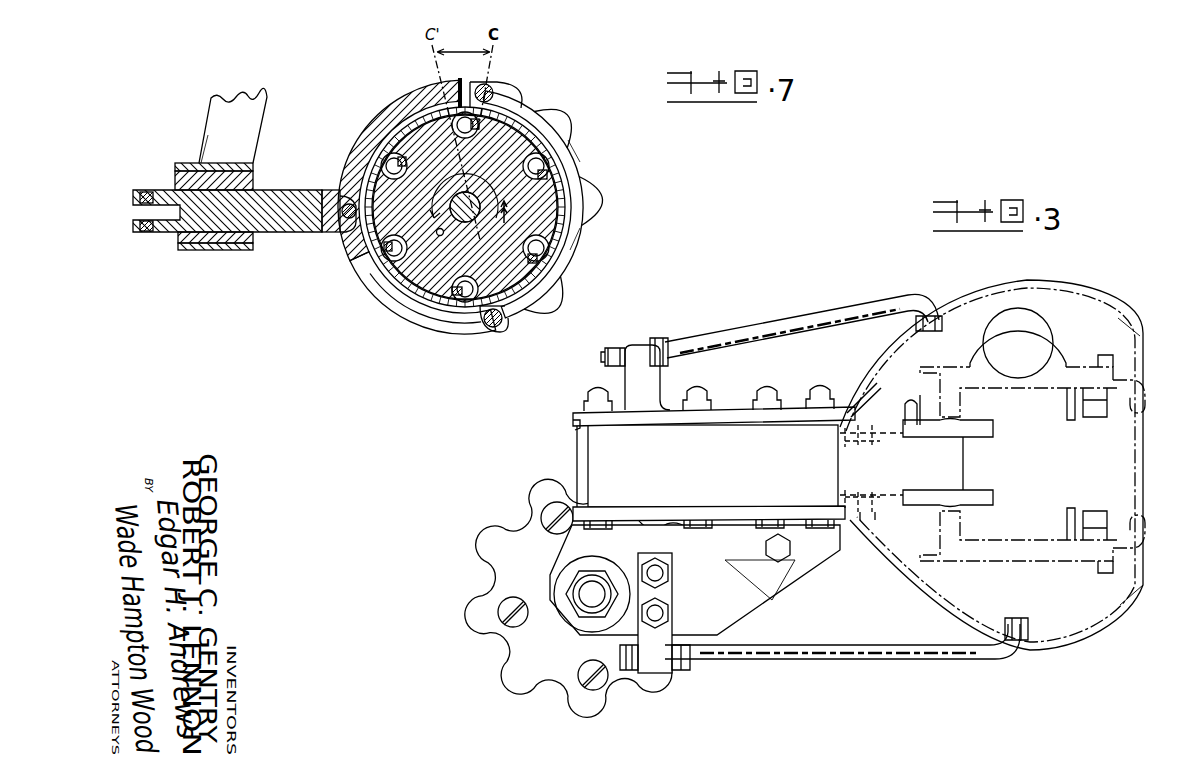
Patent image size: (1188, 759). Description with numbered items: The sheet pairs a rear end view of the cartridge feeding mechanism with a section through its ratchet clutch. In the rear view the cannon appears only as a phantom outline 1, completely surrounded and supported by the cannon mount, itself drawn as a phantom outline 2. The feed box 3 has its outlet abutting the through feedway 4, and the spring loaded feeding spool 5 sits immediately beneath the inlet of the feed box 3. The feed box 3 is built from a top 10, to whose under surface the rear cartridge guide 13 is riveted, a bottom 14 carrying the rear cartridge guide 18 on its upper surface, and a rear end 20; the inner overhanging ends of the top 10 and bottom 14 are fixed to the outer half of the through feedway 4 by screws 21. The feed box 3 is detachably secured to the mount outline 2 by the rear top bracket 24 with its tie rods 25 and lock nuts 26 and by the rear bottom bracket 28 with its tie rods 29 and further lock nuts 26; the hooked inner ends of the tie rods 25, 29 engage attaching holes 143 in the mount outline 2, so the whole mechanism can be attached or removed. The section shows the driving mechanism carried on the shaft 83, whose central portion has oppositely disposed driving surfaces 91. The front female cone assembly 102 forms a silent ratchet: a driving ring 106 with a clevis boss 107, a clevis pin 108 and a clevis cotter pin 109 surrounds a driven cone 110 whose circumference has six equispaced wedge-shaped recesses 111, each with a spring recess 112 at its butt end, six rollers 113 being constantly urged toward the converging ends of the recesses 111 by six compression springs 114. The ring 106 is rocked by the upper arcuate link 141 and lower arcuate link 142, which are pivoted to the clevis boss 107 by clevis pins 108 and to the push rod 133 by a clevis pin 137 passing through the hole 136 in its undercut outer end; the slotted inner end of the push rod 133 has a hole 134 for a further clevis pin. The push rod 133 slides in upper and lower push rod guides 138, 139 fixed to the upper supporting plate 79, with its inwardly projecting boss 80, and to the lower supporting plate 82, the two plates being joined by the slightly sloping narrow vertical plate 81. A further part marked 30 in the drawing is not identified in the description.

In FIG. 3, the phantom outline of cannon 1 is at (1062, 332).
In FIG. 3, the phantom outline of cannon mount 2 is at (985, 290).
In FIG. 3, the feed box 3 is at (744, 399).
In FIG. 3, the through feedway 4 is at (942, 460).
In FIG. 3, the feeding spool 5 is at (524, 645).
In FIG. 3, the top 10 is at (874, 412).
In FIG. 3, the rear cartridge guide 13 is at (580, 428).
In FIG. 3, the bottom 14 is at (876, 512).
In FIG. 3, the rear cartridge guide 18 is at (580, 508).
In FIG. 3, the rear end 20 is at (680, 428).
In FIG. 3, the screws 21 is at (856, 441).
In FIG. 3, the rear top bracket 24 is at (638, 344).
In FIG. 3, the tie rods 25 is at (803, 315).
In FIG. 3, the lock nuts 26 is at (667, 342).
In FIG. 3, the rear bottom bracket 28 is at (672, 625).
In FIG. 3, the tie rods 29 is at (912, 662).
In FIG. 7, the lobe of clutch arm 30 is at (585, 230).
In FIG. 7, the upper supporting plate 79 is at (214, 167).
In FIG. 7, the boss 80 is at (187, 163).
In FIG. 7, the vertical plate 81 is at (259, 124).
In FIG. 7, the lower supporting plate 82 is at (216, 251).
In FIG. 7, the shaft 83 is at (474, 185).
In FIG. 7, the driving surfaces 91 is at (473, 218).
In FIG. 7, the front female cone assembly 102 is at (566, 250).
In FIG. 7, the driving ring 106 is at (524, 304).
In FIG. 7, the clevis boss 107 is at (520, 105).
In FIG. 7, the clevis pin 108 is at (500, 94).
In FIG. 7, the clevis cotter pin 109 is at (488, 327).
In FIG. 7, the driven cone 110 is at (406, 300).
In FIG. 7, the wedge-shaped recesses 111 is at (543, 140).
In FIG. 7, the spring recess 112 is at (571, 181).
In FIG. 7, the rollers 113 is at (562, 161).
In FIG. 7, the compression springs 114 is at (552, 266).
In FIG. 7, the push rod 133 is at (271, 192).
In FIG. 7, the hole 134 is at (149, 230).
In FIG. 7, the hole 136 is at (345, 232).
In FIG. 7, the clevis pin 137 is at (329, 194).
In FIG. 7, the upper push rod guide 138 is at (175, 181).
In FIG. 7, the lower push rod guide 139 is at (180, 248).
In FIG. 7, the upper arcuate link 141 is at (372, 122).
In FIG. 7, the lower arcuate link 142 is at (437, 327).
In FIG. 3, the attaching holes 143 is at (942, 322).